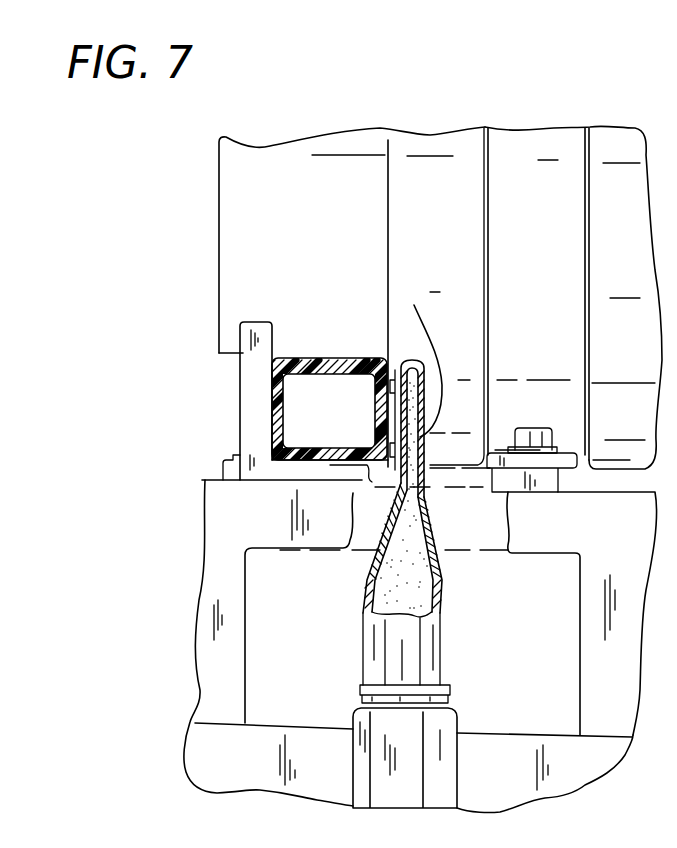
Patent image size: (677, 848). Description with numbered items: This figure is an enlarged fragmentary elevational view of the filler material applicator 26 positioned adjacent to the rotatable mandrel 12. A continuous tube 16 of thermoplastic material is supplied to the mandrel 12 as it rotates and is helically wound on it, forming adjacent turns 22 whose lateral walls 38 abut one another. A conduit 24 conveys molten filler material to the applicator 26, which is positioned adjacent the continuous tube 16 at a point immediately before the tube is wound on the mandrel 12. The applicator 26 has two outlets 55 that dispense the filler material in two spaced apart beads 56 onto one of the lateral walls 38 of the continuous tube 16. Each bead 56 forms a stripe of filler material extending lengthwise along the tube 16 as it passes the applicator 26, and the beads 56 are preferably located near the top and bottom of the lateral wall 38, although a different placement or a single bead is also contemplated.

The mandrel 12 is at (228, 185).
The turns 22 is at (618, 150).
The continuous tube 16 is at (240, 383).
The lateral walls 38 is at (375, 410).
The beads 56 is at (388, 350).
The outlets 55 is at (398, 362).
The applicator 26 is at (375, 530).
The conduit 24 is at (355, 763).